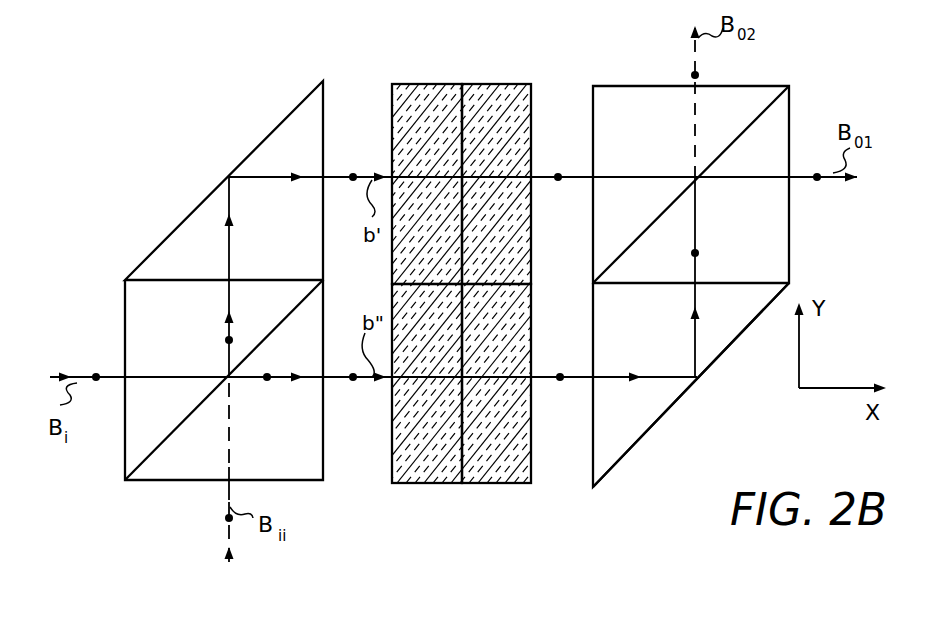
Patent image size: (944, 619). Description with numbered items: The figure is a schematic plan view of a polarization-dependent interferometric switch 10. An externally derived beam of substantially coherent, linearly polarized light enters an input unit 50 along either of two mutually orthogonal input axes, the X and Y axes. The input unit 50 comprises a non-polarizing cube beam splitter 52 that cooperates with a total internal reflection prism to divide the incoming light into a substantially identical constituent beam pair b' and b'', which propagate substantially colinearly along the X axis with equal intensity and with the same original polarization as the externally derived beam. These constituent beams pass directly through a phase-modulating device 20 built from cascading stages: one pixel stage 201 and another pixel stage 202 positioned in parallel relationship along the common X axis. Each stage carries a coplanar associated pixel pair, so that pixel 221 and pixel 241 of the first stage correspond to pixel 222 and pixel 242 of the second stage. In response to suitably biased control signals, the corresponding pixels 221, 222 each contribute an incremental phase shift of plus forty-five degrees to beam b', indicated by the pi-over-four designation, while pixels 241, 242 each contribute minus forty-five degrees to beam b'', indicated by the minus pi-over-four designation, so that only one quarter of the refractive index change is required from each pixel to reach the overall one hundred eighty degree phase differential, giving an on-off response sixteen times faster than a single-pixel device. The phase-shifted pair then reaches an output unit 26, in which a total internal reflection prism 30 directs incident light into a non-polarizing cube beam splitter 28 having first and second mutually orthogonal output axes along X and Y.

The interferometric switch 10 is at (543, 39).
The phase-modulating device 20 is at (457, 328).
The pixel stage 201 is at (405, 305).
The pixel stage 202 is at (520, 304).
The pixel 221 is at (395, 110).
The pixel 222 is at (548, 97).
The pixel 241 is at (461, 488).
The pixel 242 is at (463, 488).
The output unit 26 is at (727, 385).
The cube beam splitter 28 is at (777, 255).
The total internal reflection prism 30 is at (630, 433).
The input unit 50 is at (283, 124).
The cube beam splitter 52 is at (163, 472).